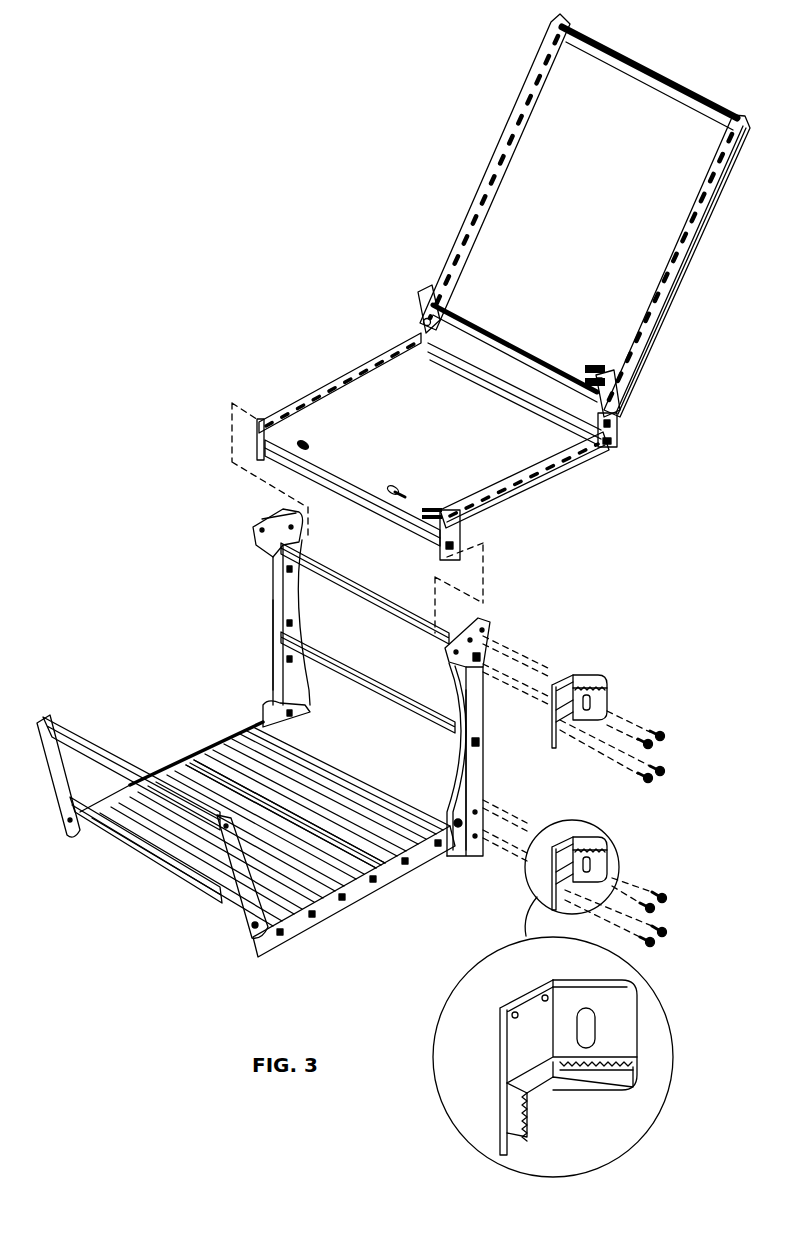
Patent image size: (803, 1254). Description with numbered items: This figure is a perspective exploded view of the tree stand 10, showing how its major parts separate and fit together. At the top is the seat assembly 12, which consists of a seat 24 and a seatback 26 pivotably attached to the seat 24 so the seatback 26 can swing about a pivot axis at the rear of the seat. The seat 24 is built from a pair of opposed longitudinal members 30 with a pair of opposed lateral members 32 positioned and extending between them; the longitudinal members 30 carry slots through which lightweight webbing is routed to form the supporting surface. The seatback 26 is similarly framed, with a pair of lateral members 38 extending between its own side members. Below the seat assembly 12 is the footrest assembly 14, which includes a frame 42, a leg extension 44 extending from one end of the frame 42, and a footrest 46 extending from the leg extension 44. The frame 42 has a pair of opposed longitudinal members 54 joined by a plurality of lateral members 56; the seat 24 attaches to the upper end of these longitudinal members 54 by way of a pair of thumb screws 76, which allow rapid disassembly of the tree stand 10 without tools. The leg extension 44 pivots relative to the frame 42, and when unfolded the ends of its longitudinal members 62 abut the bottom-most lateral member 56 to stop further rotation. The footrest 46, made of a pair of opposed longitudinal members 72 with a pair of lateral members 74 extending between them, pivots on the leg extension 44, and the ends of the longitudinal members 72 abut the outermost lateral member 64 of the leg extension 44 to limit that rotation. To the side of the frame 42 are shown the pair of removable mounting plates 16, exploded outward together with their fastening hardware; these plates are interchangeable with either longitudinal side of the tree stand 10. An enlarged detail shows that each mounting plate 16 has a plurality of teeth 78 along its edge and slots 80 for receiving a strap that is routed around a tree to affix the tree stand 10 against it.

The tree stand 10 is at (118, 182).
The seat assembly 12 is at (370, 252).
The footrest assembly 14 is at (163, 698).
The mounting plate 16 is at (600, 680).
The seat 24 is at (618, 447).
The seatback 26 is at (503, 133).
The longitudinal member 30 is at (310, 388).
The lateral member 32 is at (487, 372).
The lateral member 38 is at (698, 93).
The frame 42 is at (277, 597).
The leg extension 44 is at (267, 799).
The footrest 46 is at (143, 796).
The longitudinal member 54 is at (273, 570).
The lateral member 56 is at (392, 600).
The longitudinal member 62 is at (177, 763).
The outermost lateral member 64 is at (190, 757).
The longitudinal member 72 is at (63, 775).
The lateral member 74 is at (70, 740).
The thumb screw 76 is at (313, 445).
The teeth 78 is at (615, 1090).
The slot 80 is at (598, 1030).